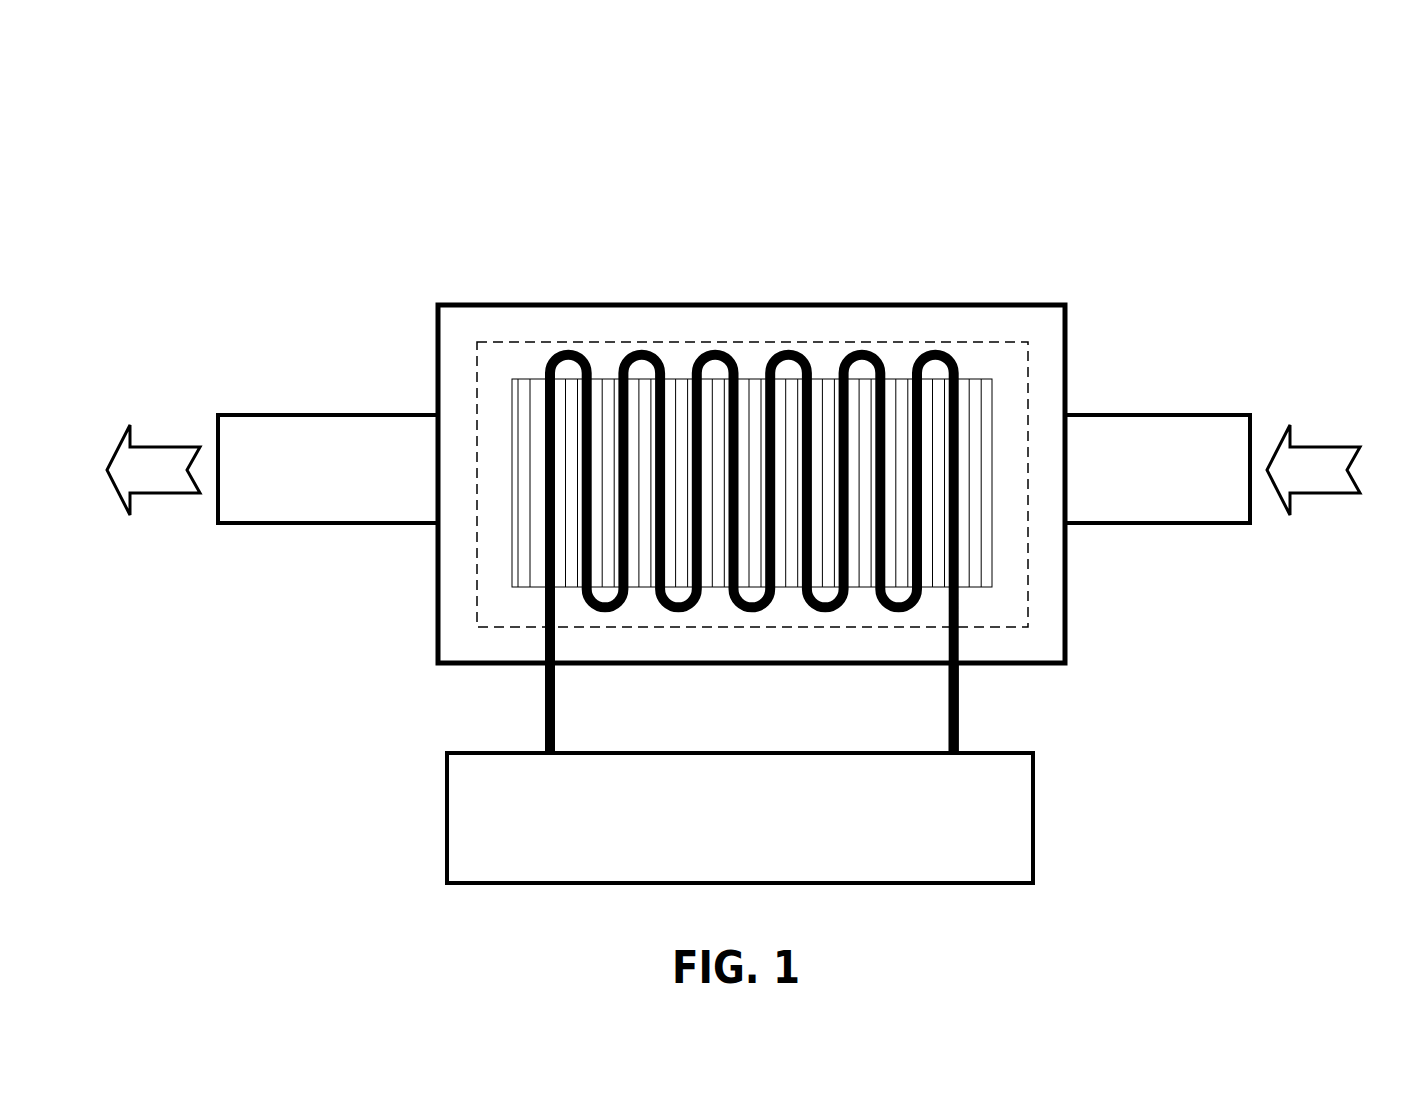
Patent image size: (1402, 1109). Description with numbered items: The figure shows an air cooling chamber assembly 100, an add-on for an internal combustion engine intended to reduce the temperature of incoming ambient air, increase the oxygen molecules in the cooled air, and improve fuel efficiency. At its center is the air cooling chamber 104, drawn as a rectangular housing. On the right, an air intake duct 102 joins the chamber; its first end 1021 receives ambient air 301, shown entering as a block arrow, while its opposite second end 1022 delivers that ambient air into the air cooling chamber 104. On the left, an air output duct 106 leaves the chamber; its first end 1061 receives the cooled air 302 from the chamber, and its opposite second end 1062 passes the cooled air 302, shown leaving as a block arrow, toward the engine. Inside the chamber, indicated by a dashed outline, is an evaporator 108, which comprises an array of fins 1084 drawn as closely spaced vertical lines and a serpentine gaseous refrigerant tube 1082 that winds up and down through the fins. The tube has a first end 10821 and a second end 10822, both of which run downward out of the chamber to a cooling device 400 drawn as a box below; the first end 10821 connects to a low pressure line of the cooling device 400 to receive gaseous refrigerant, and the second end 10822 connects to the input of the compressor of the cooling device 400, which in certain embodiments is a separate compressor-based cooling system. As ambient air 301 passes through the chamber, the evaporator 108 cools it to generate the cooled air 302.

The air cooling chamber assembly 100 is at (396, 160).
The air intake duct 102 is at (1157, 413).
The first end of air intake duct 1021 is at (1247, 413).
The second end of air intake duct 1022 is at (1068, 413).
The air cooling chamber 104 is at (1065, 305).
The air output duct 106 is at (338, 413).
The first end of air output duct 1061 is at (433, 413).
The second end of air output duct 1062 is at (258, 413).
The evaporator 108 is at (512, 342).
The gaseous refrigerant tube 1082 is at (937, 357).
The array of fins 1084 is at (992, 378).
The first end of gaseous refrigerant tube 10821 is at (960, 708).
The second end of gaseous refrigerant tube 10822 is at (545, 708).
The ambient air 301 is at (1303, 447).
The cooled air 302 is at (150, 447).
The cooling device 400 is at (1035, 819).